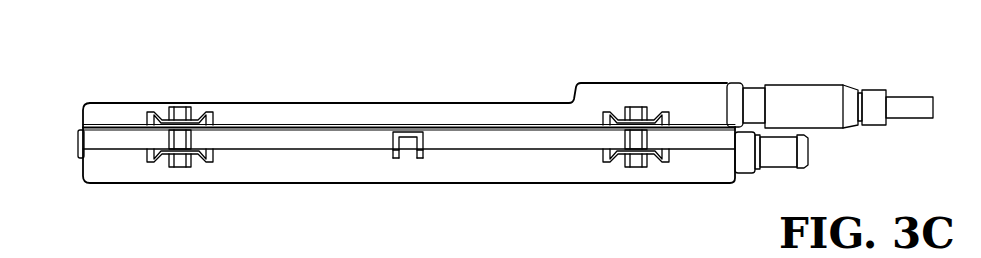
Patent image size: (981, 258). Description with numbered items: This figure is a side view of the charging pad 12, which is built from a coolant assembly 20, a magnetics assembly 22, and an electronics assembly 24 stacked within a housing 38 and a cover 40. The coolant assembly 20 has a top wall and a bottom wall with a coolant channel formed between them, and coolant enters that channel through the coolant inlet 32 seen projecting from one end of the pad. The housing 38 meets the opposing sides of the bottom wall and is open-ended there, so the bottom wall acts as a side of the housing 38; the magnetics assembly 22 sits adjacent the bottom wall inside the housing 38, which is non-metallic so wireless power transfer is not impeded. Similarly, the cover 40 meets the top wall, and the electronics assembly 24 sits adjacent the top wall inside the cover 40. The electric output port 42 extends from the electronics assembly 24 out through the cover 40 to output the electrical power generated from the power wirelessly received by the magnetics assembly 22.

The charging pad 12 is at (475, 133).
The coolant assembly 20 is at (83, 142).
The magnetics assembly 22 is at (486, 184).
The electronics assembly 24 is at (450, 104).
The coolant inlet 32 is at (809, 152).
The housing 38 is at (318, 185).
The cover 40 is at (352, 102).
The electric output port 42 is at (803, 88).